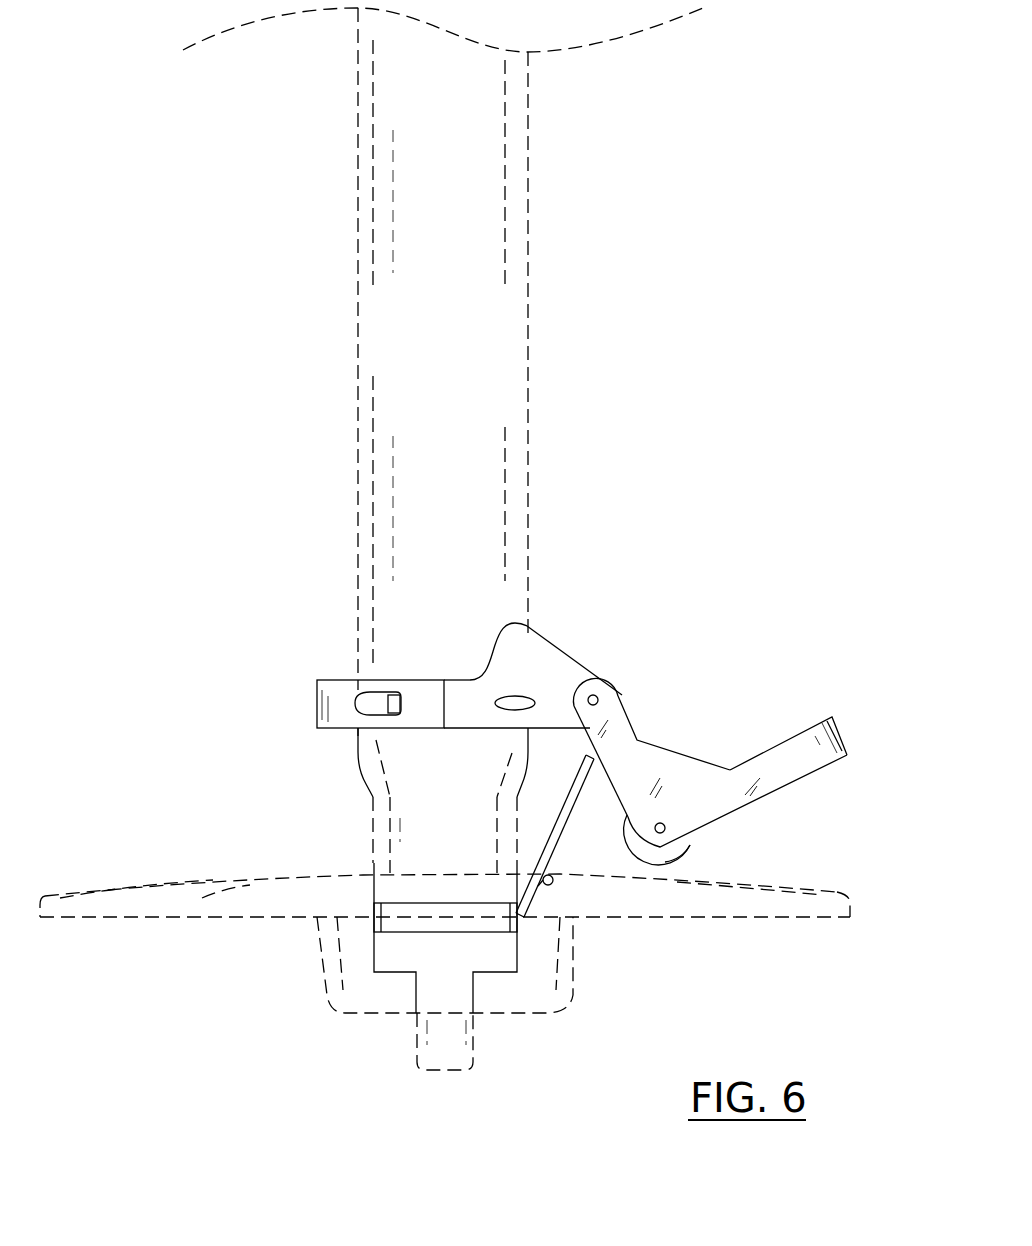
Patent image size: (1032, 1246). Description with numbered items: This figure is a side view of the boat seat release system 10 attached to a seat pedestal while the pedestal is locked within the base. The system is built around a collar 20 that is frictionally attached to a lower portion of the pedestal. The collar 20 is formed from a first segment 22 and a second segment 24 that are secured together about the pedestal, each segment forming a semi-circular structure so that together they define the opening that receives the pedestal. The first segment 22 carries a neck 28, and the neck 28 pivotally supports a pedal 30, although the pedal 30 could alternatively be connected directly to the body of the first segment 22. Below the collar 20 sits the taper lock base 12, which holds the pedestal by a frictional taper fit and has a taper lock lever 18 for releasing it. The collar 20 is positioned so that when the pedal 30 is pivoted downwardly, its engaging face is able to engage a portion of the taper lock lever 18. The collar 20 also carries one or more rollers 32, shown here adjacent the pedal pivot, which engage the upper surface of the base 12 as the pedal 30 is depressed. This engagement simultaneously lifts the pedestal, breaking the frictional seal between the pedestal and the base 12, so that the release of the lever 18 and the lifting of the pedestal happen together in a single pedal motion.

The boat seat release system 10 is at (745, 358).
The taper lock base 12 is at (170, 893).
The taper lock lever 18 is at (567, 832).
The collar 20 is at (612, 668).
The first segment 22 is at (519, 625).
The second segment 24 is at (340, 688).
The neck 28 is at (578, 657).
The pedal 30 is at (797, 745).
The roller 32 is at (670, 852).